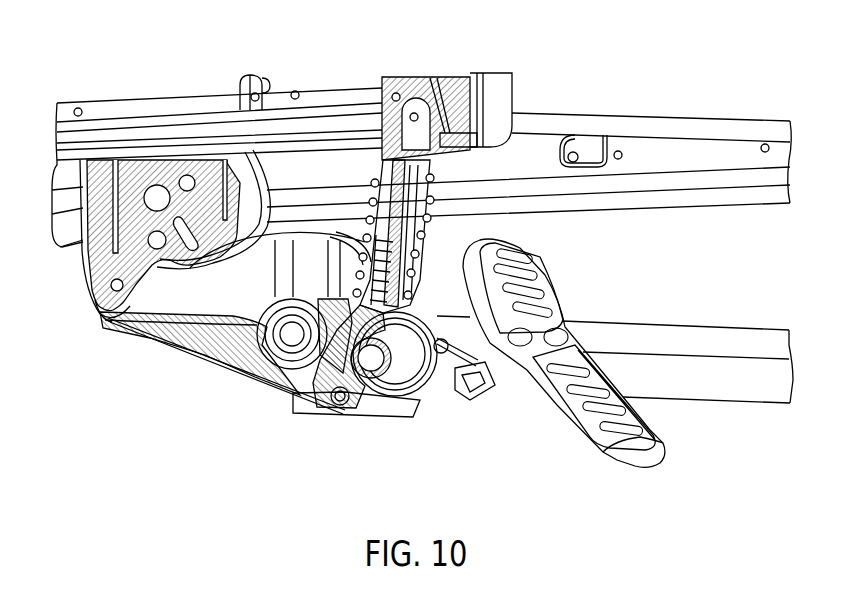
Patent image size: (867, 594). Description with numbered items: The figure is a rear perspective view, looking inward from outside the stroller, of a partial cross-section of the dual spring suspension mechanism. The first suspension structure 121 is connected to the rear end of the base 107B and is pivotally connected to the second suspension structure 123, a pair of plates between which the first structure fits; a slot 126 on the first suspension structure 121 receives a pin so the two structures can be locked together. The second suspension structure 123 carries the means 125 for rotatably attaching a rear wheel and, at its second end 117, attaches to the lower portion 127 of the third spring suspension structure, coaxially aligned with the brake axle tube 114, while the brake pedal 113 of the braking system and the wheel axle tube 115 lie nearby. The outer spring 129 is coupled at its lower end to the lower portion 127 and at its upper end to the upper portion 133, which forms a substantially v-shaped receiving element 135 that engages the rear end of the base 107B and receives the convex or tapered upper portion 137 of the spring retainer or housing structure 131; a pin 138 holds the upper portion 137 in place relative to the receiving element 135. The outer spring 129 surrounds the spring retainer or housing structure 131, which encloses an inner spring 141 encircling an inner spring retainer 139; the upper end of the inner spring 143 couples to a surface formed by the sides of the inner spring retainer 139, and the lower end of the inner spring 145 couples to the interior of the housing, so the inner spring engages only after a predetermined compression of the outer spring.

The rear end of the base 107B is at (498, 88).
The brake pedal 113 is at (633, 458).
The brake axle tube 114 is at (728, 393).
The wheel axle tube 115 is at (745, 335).
The second end of the second suspension structure 117 is at (371, 360).
The first suspension structure 121 is at (105, 245).
The second suspension structure 123 is at (203, 357).
The means for rotatably attaching a rear wheel 125 is at (292, 338).
The slot 126 is at (122, 312).
The lower portion of the third spring suspension structure 127 is at (402, 373).
The outer spring 129 is at (453, 380).
The spring retainer or housing structure 131 is at (480, 368).
The upper portion of the third spring suspension structure 133 is at (408, 83).
The receiving element 135 is at (433, 110).
The upper portion of the spring retainer or housing structure 137 is at (400, 155).
The pin 138 is at (415, 114).
The inner spring retainer 139 is at (232, 290).
The inner spring 141 is at (300, 385).
The upper end of the inner spring 143 is at (357, 235).
The lower end of the inner spring 145 is at (338, 400).